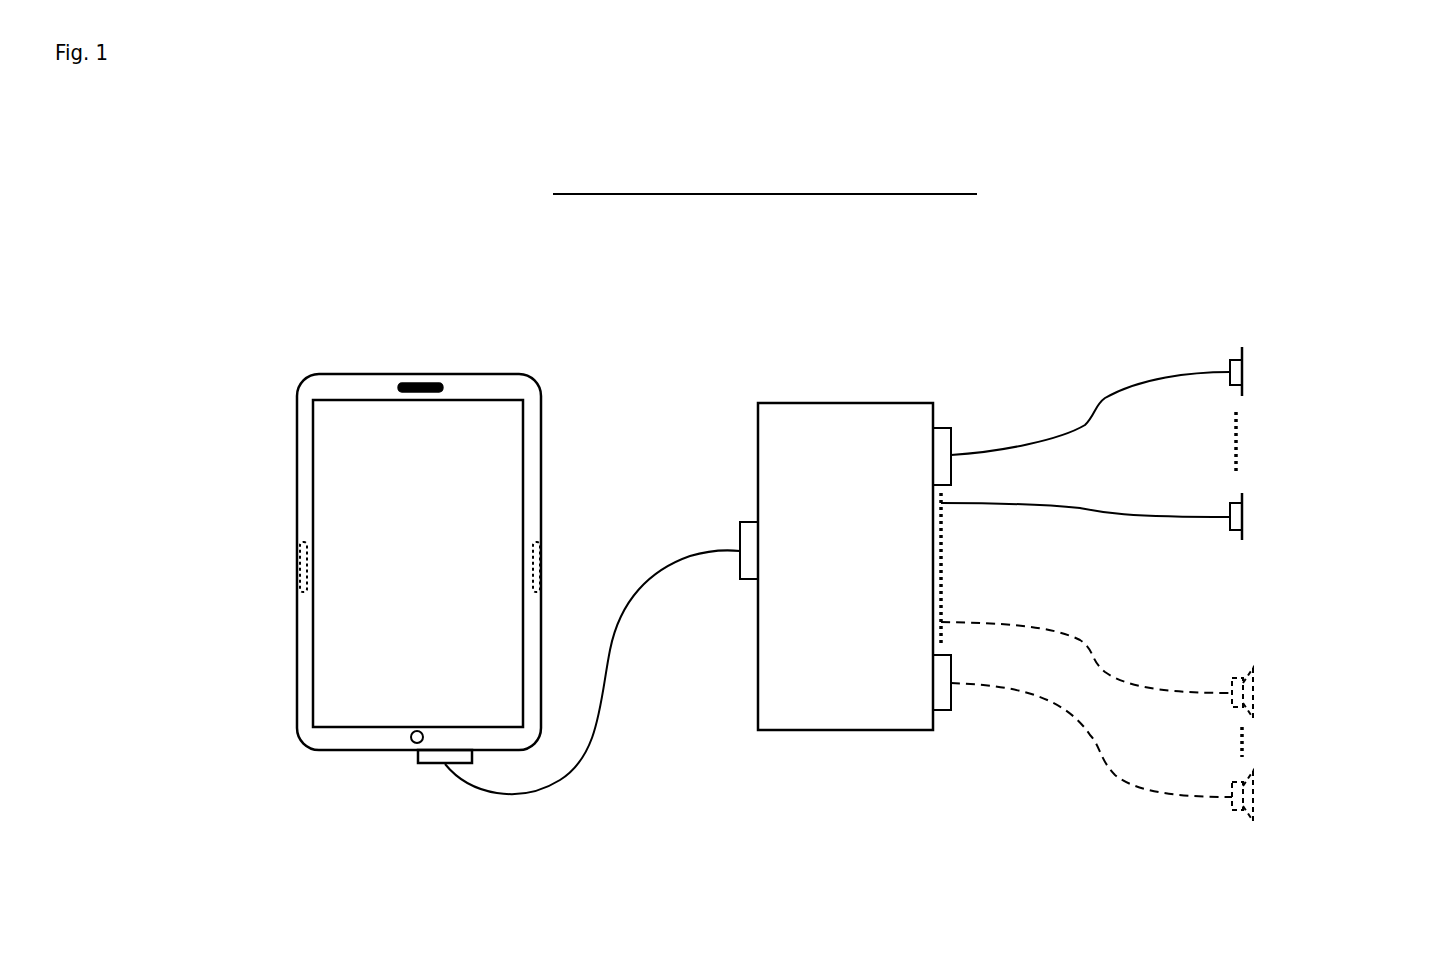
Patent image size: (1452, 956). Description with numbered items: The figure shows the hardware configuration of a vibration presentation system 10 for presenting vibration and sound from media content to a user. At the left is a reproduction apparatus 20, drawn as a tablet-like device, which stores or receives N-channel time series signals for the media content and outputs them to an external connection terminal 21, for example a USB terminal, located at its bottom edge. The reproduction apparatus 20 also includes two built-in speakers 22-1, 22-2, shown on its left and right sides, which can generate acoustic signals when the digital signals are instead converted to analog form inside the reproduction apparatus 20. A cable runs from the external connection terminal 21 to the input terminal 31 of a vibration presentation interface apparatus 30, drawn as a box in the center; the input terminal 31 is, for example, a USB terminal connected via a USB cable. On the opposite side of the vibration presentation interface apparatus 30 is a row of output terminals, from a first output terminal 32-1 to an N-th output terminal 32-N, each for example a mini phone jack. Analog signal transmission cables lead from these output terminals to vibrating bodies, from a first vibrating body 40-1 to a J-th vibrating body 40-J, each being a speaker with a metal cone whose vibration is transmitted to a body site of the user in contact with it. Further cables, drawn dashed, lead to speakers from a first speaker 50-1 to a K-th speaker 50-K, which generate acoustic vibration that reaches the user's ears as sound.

The vibration presentation system 10 is at (808, 160).
The reproduction apparatus 20 is at (418, 374).
The external connection terminal 21 is at (430, 763).
The speaker 22-1 is at (300, 572).
The speaker 22-2 is at (538, 566).
The vibration presentation interface apparatus 30 is at (831, 403).
The input terminal 31 is at (739, 537).
The output terminal 32-1 is at (953, 440).
The output terminal 32-N is at (953, 678).
The vibrating body 40-1 is at (1243, 362).
The vibrating body 40-J is at (1243, 518).
The speaker 50-1 is at (1250, 682).
The speaker 50-K is at (1250, 789).